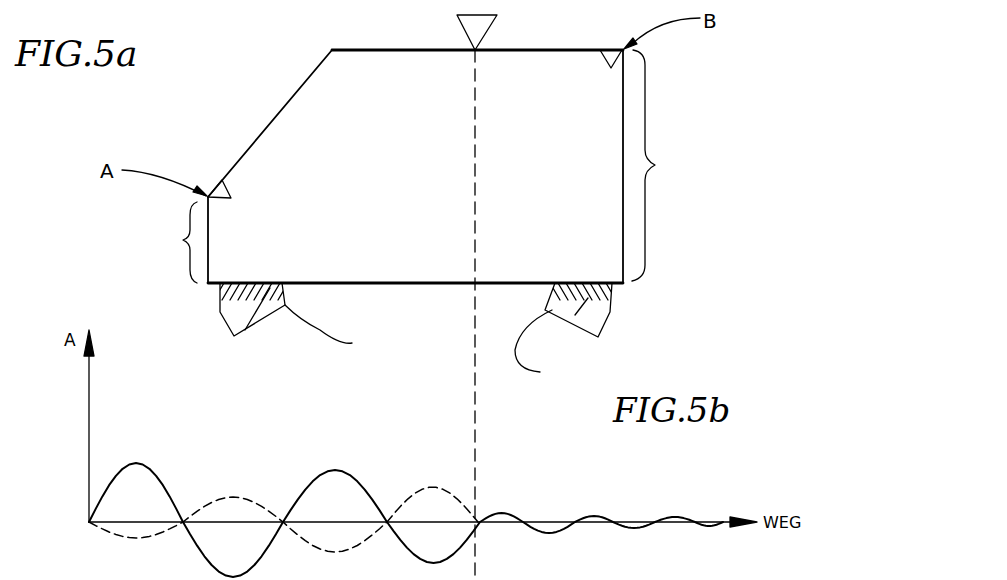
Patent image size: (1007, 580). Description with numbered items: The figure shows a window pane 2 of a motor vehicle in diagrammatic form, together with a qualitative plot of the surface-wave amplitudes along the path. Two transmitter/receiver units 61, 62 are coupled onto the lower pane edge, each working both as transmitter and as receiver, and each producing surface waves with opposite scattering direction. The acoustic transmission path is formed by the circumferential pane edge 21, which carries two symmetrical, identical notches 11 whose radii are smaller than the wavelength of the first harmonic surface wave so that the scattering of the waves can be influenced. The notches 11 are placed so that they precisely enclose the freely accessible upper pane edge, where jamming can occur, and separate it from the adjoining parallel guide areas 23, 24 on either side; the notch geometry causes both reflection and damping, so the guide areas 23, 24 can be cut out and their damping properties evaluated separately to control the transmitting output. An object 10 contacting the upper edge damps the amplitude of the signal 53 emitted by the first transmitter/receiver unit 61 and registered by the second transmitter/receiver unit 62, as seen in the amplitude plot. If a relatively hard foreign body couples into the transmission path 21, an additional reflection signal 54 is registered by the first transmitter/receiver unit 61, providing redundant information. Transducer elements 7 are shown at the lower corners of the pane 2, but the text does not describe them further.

In FIG. 5a, the window pane 2 is at (336, 120).
In FIG. 5a, the circumferential pane edge 21 is at (378, 49).
In FIG. 5a, the object 10 is at (460, 22).
In FIG. 5a, the notches 11 is at (613, 48).
In FIG. 5a, the guide area 24 is at (661, 165).
In FIG. 5a, the guide area 23 is at (171, 242).
In FIG. 5a, the ultrasonic transducers 7 is at (220, 291).
In FIG. 5a, the first transmitter/receiver unit 61 is at (337, 331).
In FIG. 5a, the second transmitter/receiver unit 62 is at (545, 349).
In FIG. 5b, the signal 53 is at (322, 455).
In FIG. 5b, the reflection signal 54 is at (428, 470).